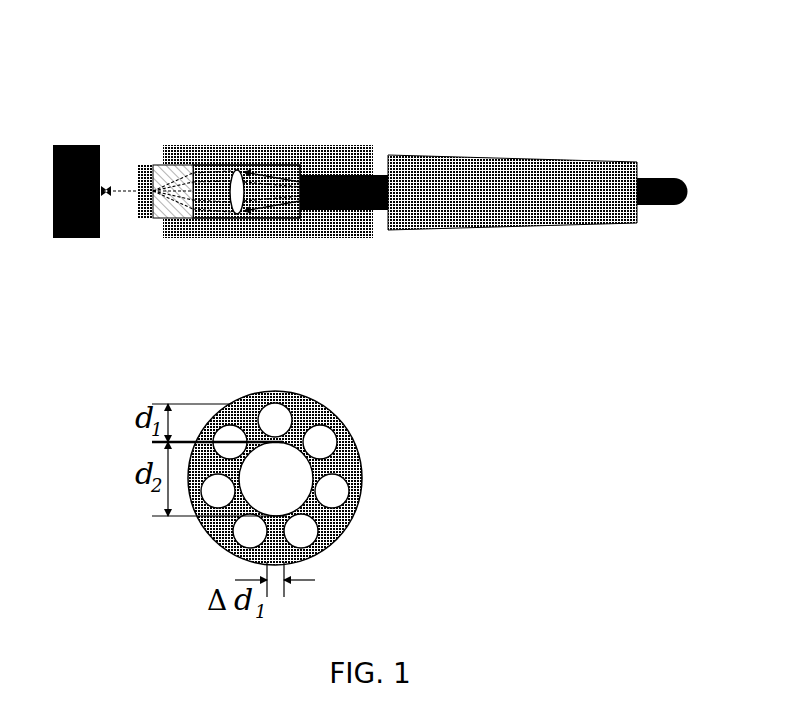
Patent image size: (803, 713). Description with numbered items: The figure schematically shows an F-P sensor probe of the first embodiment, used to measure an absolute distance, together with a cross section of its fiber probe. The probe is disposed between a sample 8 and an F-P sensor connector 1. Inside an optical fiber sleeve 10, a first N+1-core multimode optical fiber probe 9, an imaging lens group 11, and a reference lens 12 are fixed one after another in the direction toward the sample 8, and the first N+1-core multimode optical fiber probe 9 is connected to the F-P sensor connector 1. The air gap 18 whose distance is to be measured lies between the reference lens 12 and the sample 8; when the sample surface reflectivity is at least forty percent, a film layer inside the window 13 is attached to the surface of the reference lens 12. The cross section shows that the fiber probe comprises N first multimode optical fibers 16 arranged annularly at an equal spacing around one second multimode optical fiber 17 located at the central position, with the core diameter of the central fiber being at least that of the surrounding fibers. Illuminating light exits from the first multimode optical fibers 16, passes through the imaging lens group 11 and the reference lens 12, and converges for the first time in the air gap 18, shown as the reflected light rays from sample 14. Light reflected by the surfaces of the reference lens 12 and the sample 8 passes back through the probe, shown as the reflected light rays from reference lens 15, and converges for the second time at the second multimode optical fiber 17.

The F-P sensor connector 1 is at (460, 160).
The sample 8 is at (80, 147).
The first N+1-core multimode optical fiber probe 9 is at (343, 210).
The optical fiber sleeve 10 is at (317, 157).
The imaging lens group 11 is at (240, 177).
The reference lens 12 is at (172, 173).
The film layer inside the window 13 is at (142, 220).
The reflected light rays from sample 14 is at (210, 208).
The reflected light rays from reference lens 15 is at (270, 205).
The first multimode optical fiber 16 is at (320, 443).
The second multimode optical fiber 17 is at (280, 485).
The air gap 18 is at (113, 172).